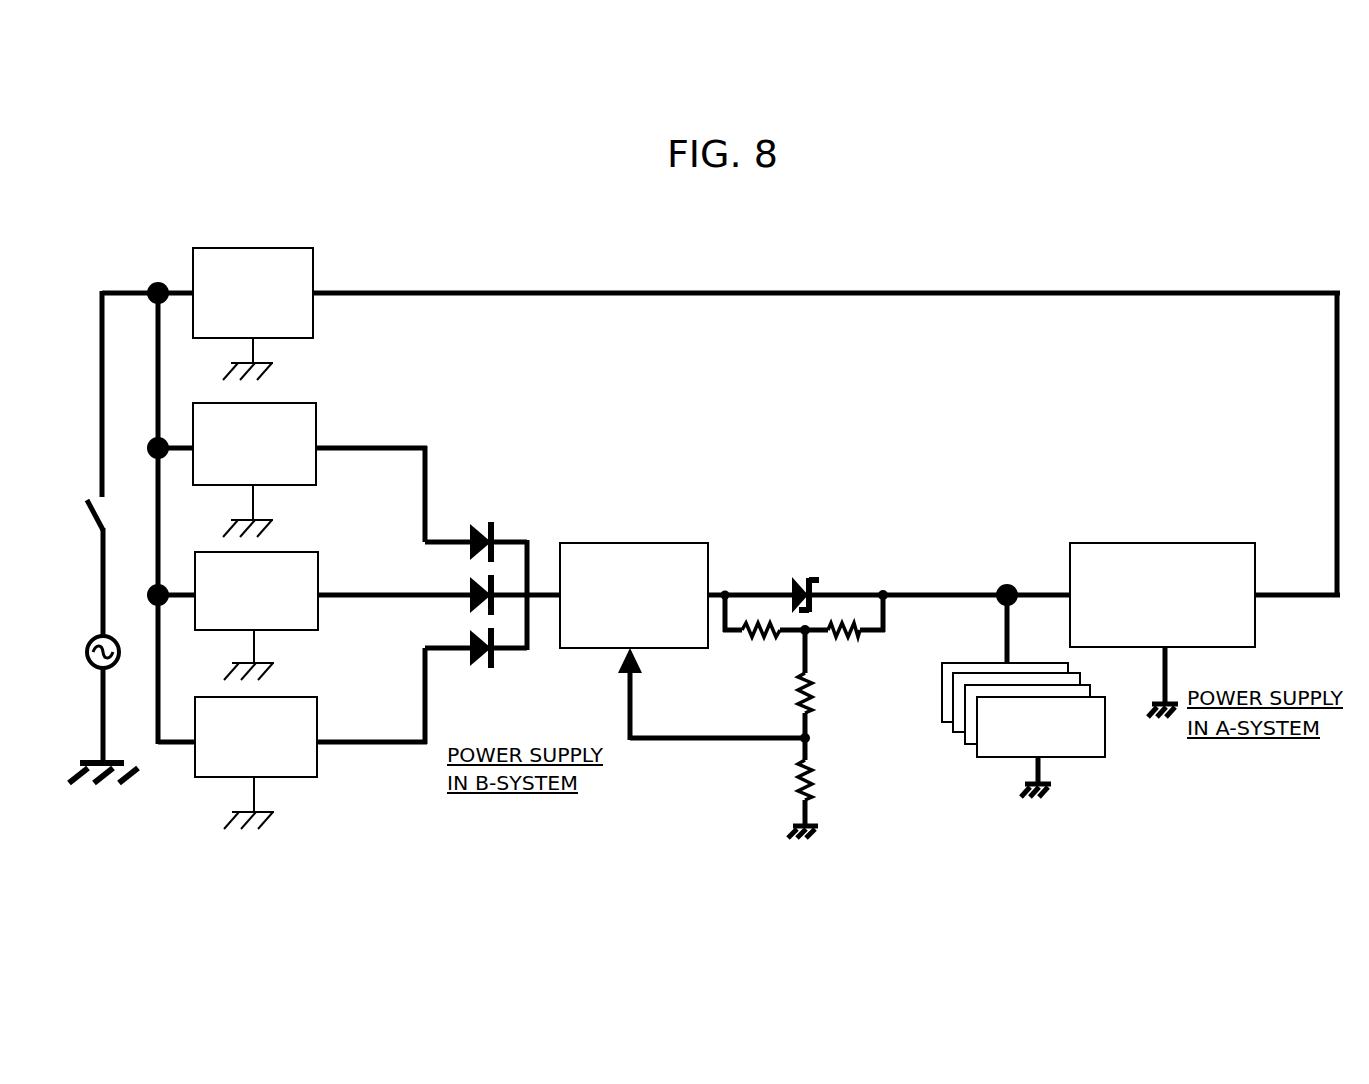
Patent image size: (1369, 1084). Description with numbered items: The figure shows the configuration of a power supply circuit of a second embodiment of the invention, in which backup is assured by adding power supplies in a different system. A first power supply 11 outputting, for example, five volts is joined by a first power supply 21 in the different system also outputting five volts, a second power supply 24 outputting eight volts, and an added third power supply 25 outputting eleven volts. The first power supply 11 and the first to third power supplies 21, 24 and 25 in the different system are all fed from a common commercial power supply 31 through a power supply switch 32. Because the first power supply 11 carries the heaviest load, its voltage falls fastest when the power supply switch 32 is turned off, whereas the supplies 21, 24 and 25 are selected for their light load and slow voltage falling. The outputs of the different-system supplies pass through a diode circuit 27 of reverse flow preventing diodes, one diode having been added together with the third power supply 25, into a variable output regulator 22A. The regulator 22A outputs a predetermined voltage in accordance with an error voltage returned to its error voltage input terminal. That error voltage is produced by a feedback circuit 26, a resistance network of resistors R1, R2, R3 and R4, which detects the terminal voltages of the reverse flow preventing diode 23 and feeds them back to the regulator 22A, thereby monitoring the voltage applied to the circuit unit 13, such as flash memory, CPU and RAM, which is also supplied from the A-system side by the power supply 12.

The first power supply 11 is at (256, 248).
The power supply in A-system (voltage output/input circuit) 12 is at (1137, 543).
The circuit unit 13 is at (944, 652).
The first power supply in a different system 21 is at (289, 403).
The variable output regulator 22A is at (628, 543).
The reverse flow preventing diode 23 is at (797, 572).
The second power supply 24 is at (293, 552).
The third power supply 25 is at (300, 697).
The feedback circuit 26 is at (765, 734).
The diode circuit 27 is at (484, 508).
The commercial power supply 31 is at (85, 660).
The power supply switch 32 is at (85, 522).
The resistor R1 is at (761, 649).
The resistor R2 is at (846, 649).
The resistor R3 is at (824, 694).
The resistor R4 is at (824, 781).